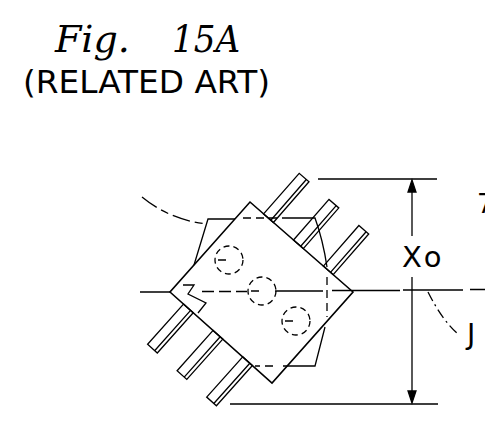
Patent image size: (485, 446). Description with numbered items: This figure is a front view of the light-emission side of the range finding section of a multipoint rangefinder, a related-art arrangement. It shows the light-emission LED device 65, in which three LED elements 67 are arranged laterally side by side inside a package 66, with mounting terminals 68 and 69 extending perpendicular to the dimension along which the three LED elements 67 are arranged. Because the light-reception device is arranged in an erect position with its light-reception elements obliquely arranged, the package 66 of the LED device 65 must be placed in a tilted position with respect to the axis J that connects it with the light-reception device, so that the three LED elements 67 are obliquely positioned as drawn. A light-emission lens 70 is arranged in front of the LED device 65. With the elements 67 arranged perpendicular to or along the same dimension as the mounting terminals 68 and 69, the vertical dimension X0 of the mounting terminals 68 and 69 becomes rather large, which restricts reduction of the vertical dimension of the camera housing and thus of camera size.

The light-emission LED device 65 is at (223, 218).
The package 66 is at (259, 203).
The LED elements 67 is at (282, 323).
The mounting terminals 68 is at (366, 231).
The mounting terminals 69 is at (214, 403).
The light-emission lens 70 is at (162, 193).